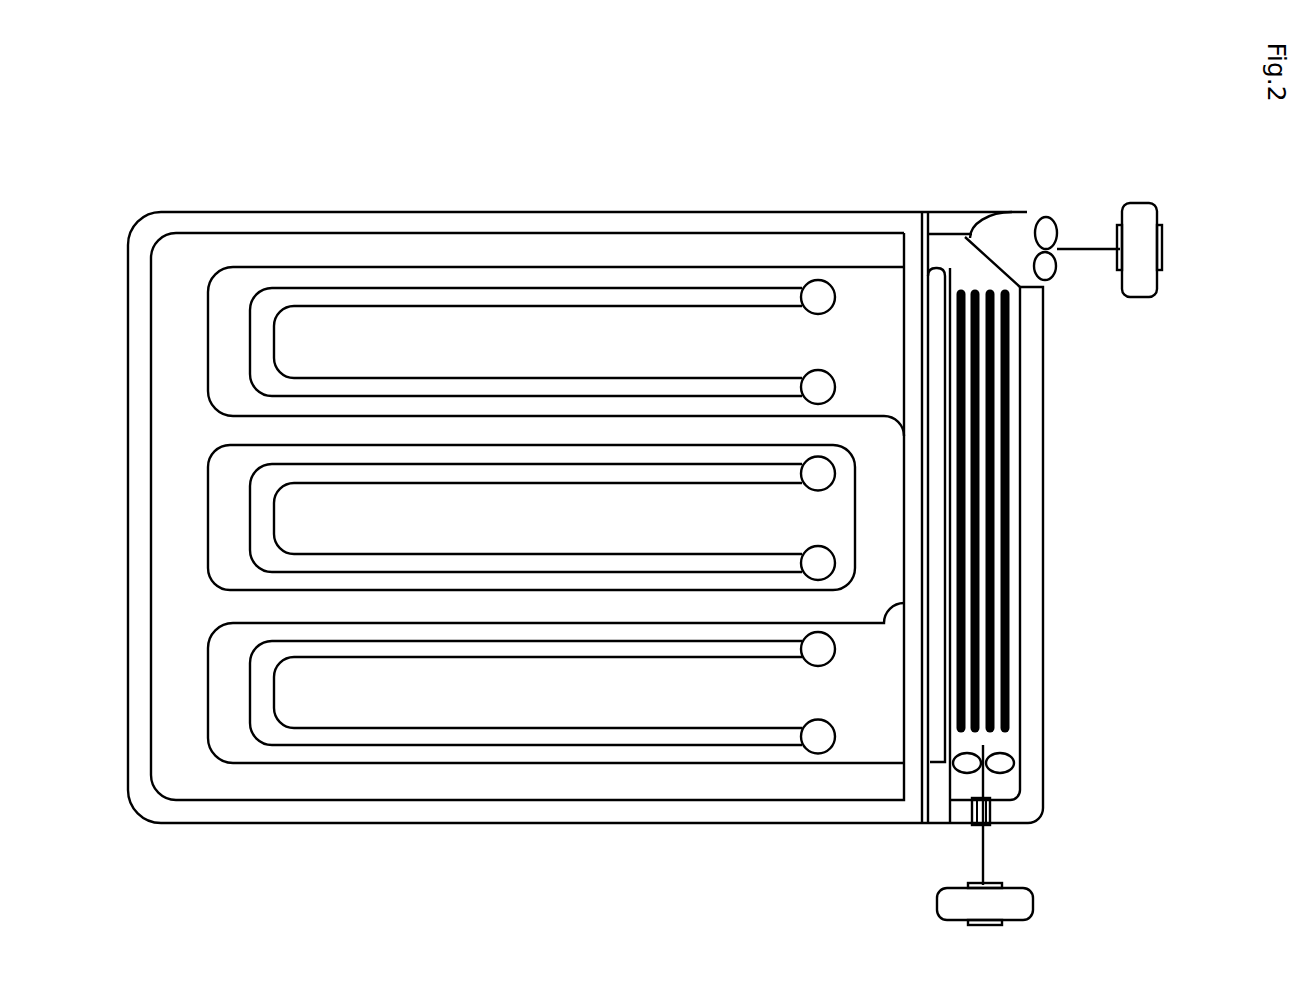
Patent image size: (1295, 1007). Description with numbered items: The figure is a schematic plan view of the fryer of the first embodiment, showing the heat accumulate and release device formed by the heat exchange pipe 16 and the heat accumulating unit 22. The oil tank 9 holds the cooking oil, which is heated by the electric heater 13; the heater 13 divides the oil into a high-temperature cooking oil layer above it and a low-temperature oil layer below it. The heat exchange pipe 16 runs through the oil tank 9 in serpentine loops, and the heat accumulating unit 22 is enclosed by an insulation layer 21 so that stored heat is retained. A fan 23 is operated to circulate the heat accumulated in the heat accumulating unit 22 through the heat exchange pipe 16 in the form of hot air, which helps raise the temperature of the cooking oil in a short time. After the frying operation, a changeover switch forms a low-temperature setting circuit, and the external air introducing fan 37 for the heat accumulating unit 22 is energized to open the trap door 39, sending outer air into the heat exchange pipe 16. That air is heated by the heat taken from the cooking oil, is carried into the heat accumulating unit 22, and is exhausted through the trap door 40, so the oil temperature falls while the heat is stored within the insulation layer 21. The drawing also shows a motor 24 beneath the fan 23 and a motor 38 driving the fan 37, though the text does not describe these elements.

The oil tank 9 is at (254, 218).
The electric heater 13 is at (373, 307).
The heat exchange pipe 16 is at (493, 250).
The insulation layer 21 is at (930, 283).
The heat accumulating unit 22 is at (1010, 470).
The fan 23 is at (1007, 760).
The fan motor 24 is at (1017, 903).
The external air introducing fan 37 is at (1047, 275).
The fan motor 38 is at (1138, 212).
The trap door 39 is at (1000, 258).
The trap door 40 is at (947, 825).